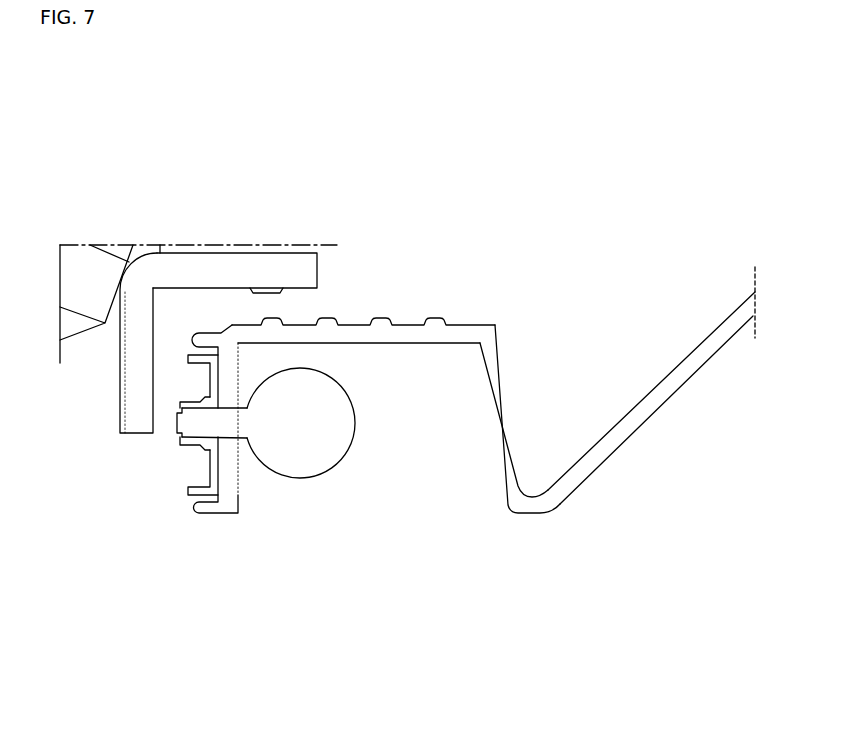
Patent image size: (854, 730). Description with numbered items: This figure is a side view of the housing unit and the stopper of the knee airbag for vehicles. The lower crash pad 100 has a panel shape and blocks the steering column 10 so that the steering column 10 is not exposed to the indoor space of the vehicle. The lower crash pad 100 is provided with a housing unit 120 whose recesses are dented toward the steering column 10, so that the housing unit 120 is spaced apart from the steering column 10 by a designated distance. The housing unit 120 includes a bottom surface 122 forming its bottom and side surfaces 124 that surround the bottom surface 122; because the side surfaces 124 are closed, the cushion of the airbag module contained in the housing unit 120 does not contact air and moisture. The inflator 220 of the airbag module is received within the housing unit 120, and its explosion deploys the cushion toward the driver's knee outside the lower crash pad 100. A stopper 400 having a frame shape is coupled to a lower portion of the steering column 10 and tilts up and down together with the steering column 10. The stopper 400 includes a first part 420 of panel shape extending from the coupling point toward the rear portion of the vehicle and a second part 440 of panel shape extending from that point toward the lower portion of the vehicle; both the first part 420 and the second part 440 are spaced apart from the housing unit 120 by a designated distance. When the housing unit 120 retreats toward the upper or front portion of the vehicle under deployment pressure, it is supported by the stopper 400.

The steering column 10 is at (80, 263).
The stopper 400 is at (189, 137).
The second part 440 is at (143, 353).
The first part 420 is at (282, 278).
The bottom surface 122 is at (407, 335).
The housing unit 120 is at (506, 321).
The lower crash pad 100 is at (726, 304).
The inflator 220 is at (298, 453).
The side surfaces 124 is at (232, 503).